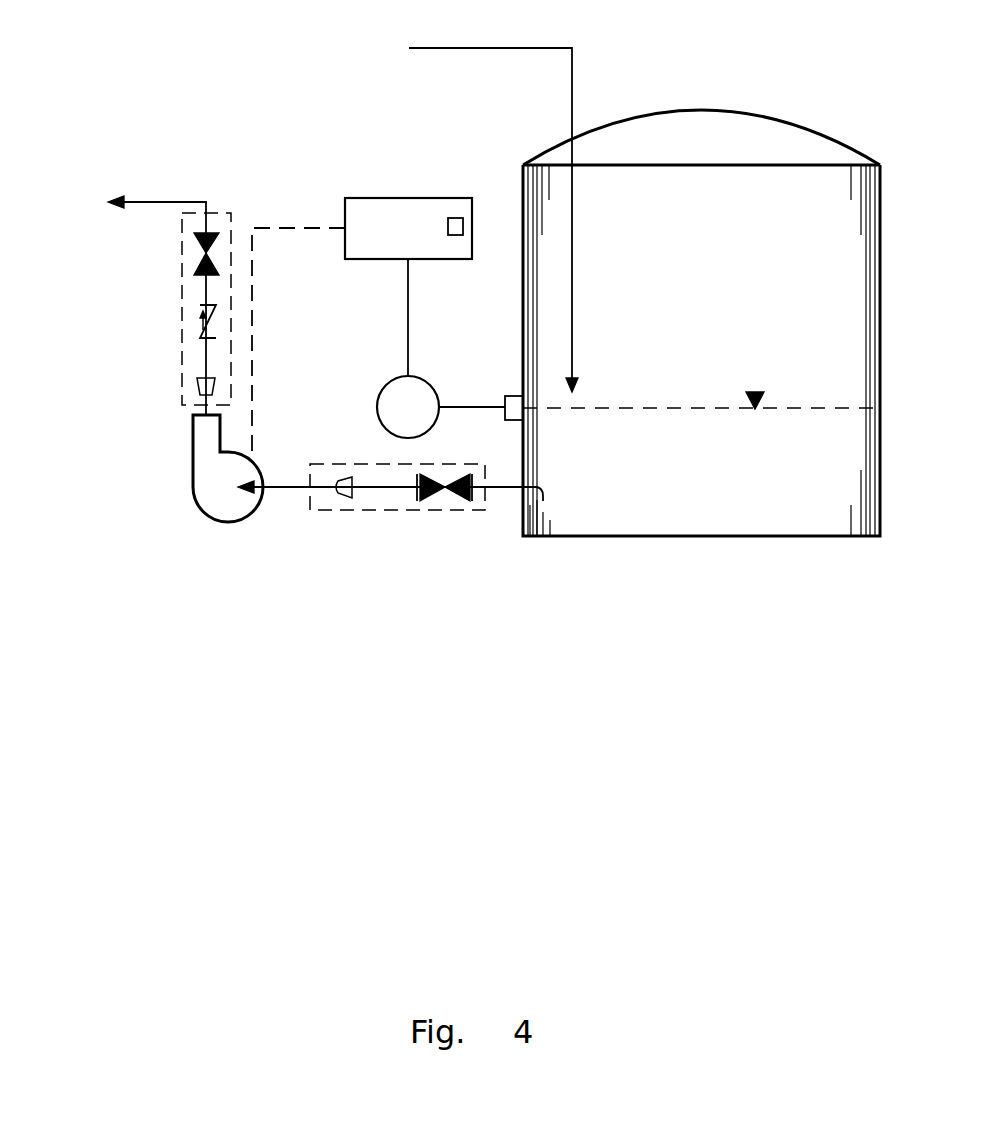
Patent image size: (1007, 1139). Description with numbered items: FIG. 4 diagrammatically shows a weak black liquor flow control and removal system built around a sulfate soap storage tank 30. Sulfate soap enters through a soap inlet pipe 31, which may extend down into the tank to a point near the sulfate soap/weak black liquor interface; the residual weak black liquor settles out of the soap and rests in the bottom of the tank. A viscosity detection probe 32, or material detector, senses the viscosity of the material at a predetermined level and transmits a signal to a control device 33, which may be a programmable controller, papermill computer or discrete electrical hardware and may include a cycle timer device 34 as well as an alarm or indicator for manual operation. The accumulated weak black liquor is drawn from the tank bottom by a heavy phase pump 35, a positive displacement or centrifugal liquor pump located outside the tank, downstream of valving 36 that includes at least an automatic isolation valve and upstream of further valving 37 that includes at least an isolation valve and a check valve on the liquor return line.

The sulfate soap storage tank 30 is at (835, 141).
The soap inlet pipe 31 is at (573, 76).
The viscosity detection probe 32 is at (397, 381).
The control device 33 is at (380, 198).
The cycle timer device 34 is at (463, 218).
The heavy phase pump 35 is at (193, 441).
The valving 36 is at (345, 464).
The valving 37 is at (182, 325).